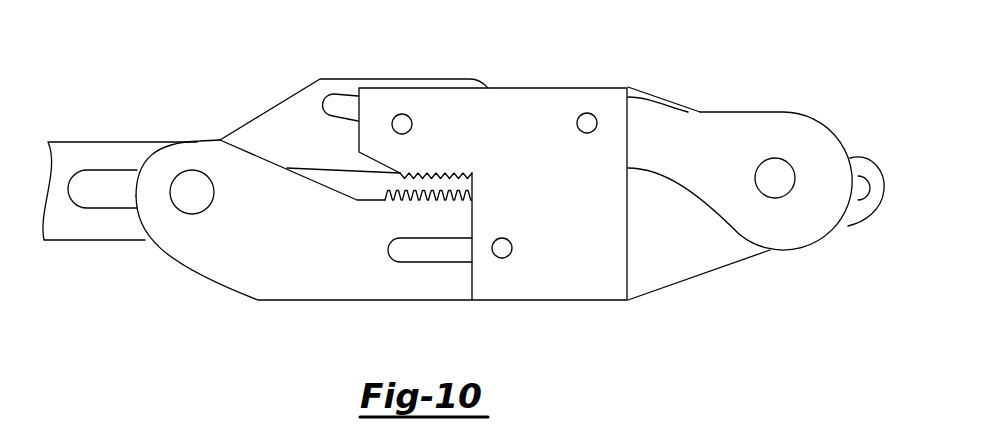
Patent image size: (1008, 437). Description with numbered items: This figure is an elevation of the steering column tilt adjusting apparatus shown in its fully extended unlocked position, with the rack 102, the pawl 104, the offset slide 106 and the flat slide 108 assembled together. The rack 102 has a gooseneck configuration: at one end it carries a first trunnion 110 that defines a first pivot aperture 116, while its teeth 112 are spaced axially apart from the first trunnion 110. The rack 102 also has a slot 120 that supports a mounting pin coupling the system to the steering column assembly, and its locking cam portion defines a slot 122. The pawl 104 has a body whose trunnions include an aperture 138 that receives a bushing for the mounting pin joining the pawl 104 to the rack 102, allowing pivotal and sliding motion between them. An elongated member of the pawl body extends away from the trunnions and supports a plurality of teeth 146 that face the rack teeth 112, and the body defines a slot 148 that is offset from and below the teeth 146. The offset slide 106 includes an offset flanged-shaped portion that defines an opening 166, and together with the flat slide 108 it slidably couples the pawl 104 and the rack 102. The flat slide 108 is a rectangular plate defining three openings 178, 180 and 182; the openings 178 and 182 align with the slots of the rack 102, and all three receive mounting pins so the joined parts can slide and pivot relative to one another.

The rack 102 is at (356, 79).
The pawl 104 is at (267, 300).
The offset slide 106 is at (680, 283).
The flat slide 108 is at (590, 244).
The first trunnion 110 is at (792, 251).
The teeth 112 is at (357, 184).
The first pivot aperture 116 is at (775, 178).
The slot 120 is at (105, 192).
The slot 122 is at (328, 102).
The aperture 138 is at (188, 200).
The teeth 146 is at (389, 200).
The slot 148 is at (412, 252).
The opening 166 is at (858, 188).
The opening 178 is at (586, 120).
The opening 180 is at (402, 123).
The opening 182 is at (502, 252).